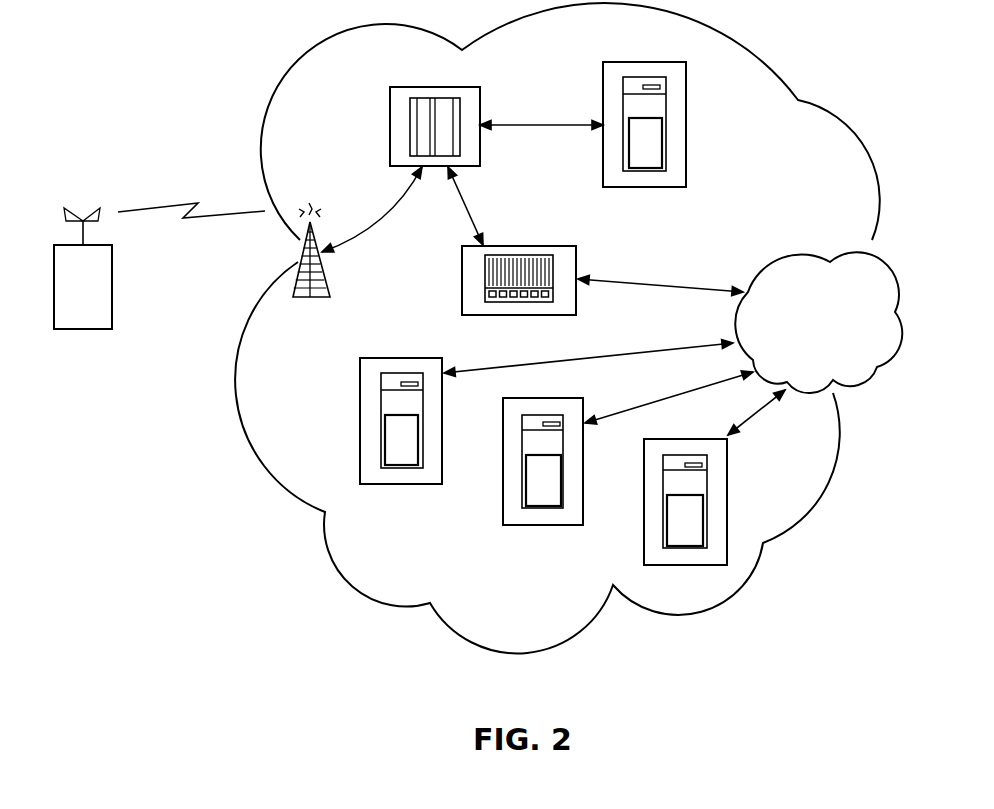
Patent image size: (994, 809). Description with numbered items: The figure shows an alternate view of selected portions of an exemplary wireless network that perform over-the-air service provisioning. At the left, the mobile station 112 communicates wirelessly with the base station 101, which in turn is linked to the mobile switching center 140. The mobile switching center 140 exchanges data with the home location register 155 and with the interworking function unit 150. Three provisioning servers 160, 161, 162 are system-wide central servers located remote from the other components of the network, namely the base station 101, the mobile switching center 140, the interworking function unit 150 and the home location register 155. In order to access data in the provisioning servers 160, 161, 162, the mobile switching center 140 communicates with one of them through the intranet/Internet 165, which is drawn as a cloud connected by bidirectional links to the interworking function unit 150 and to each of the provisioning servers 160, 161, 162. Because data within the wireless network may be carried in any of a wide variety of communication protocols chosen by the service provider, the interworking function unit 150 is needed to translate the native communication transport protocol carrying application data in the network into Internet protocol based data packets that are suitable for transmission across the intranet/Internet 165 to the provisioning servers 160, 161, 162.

The base station (BS) 101 is at (330, 279).
The mobile station (MS) 112 is at (83, 329).
The mobile switching center (MSC) 140 is at (390, 126).
The interworking function (IWF) unit 150 is at (513, 245).
The home location register (HLR) 155 is at (686, 125).
The provisioning server 160 is at (727, 500).
The provisioning server 161 is at (542, 525).
The provisioning server 162 is at (402, 484).
The intranet/Internet 165 is at (815, 258).